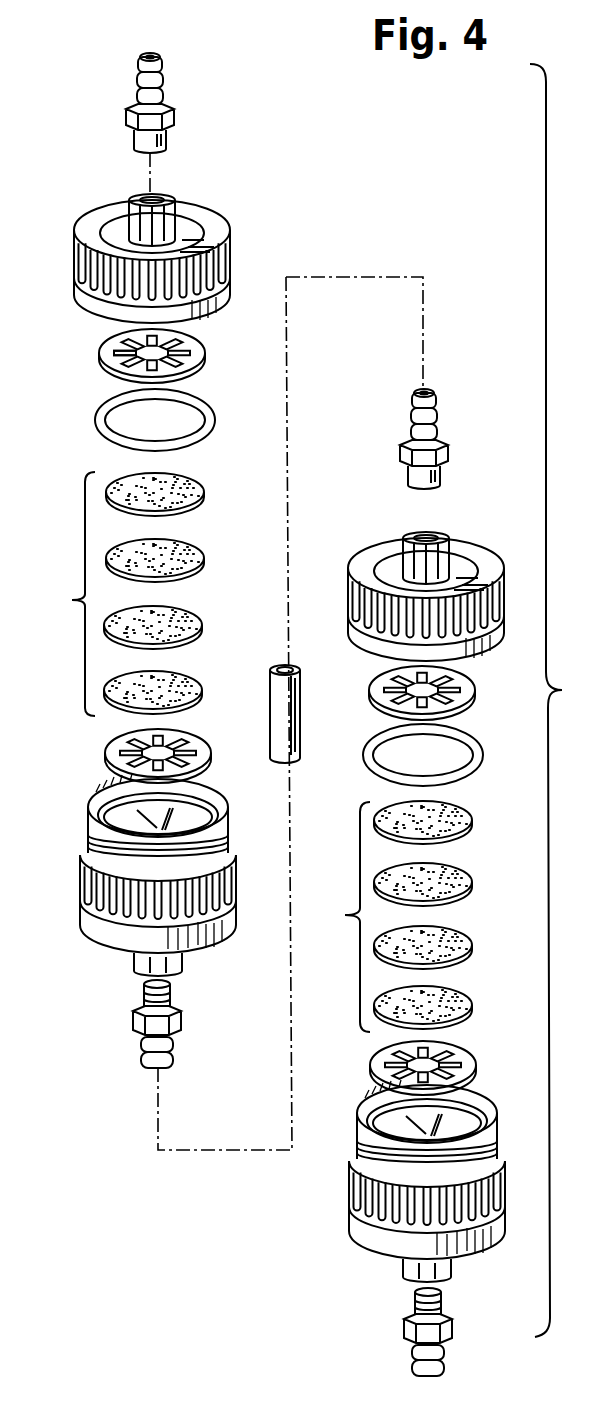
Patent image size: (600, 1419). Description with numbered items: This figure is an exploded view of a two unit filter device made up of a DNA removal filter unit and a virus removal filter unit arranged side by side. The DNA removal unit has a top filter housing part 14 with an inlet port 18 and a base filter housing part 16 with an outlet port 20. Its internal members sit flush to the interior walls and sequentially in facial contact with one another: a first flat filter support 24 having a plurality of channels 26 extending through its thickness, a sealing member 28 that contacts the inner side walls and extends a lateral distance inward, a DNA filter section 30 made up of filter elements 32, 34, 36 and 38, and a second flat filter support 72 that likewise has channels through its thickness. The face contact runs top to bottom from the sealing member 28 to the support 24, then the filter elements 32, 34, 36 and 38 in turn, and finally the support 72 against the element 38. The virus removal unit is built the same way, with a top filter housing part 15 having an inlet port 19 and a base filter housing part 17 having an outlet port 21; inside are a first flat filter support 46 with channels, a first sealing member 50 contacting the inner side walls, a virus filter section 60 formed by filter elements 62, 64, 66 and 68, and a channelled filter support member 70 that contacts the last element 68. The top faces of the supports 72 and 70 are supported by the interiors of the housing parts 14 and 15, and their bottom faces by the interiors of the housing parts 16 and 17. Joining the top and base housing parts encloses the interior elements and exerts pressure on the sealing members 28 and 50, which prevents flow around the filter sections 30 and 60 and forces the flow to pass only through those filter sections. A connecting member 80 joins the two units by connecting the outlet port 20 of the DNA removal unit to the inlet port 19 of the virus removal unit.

The top filter housing part 14 is at (75, 252).
The top filter housing part 15 is at (346, 570).
The base filter housing part 16 is at (81, 893).
The base filter housing part 17 is at (349, 1189).
The inlet port 18 is at (128, 113).
The inlet port 19 is at (400, 453).
The outlet port 20 is at (133, 1025).
The outlet port 21 is at (403, 1330).
The first flat filter support 24 is at (100, 360).
The channels 26 is at (117, 348).
The sealing member 28 is at (96, 418).
The DNA filter section 30 is at (63, 594).
The filter element 32 is at (197, 478).
The filter element 34 is at (200, 549).
The filter element 36 is at (200, 614).
The filter element 38 is at (198, 680).
The first flat filter support 46 is at (474, 690).
The first sealing member 50 is at (485, 755).
The virus filter section 60 is at (339, 917).
The filter element 62 is at (471, 822).
The filter element 64 is at (472, 882).
The filter element 66 is at (473, 945).
The filter element 68 is at (473, 1005).
The filter support member 70 is at (477, 1065).
The second flat filter support 72 is at (105, 755).
The connecting member 80 is at (268, 745).